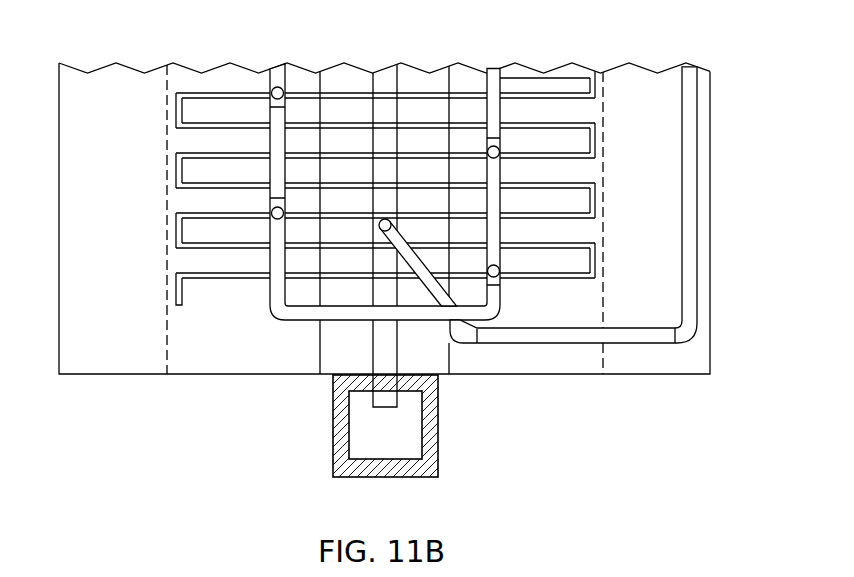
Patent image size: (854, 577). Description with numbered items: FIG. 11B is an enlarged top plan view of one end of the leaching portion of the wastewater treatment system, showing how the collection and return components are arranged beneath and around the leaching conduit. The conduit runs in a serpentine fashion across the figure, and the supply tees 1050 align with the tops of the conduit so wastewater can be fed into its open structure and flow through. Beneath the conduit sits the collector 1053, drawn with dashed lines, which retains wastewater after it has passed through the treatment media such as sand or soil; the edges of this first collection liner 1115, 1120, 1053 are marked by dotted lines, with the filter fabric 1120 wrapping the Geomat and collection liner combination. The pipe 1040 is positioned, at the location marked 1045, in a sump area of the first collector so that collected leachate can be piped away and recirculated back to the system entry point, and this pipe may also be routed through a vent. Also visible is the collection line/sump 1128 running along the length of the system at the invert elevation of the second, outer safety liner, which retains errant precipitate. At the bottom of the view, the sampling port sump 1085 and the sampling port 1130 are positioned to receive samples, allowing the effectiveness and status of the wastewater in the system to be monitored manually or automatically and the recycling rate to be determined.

The pipe 1040 is at (690, 190).
The pipe position in sump area 1045 is at (380, 230).
The supply tees 1050 is at (277, 87).
The collector 1053 is at (384, 249).
The sampling port sump 1085 is at (438, 456).
The edge of first collection liner 1115 is at (180, 264).
The filter fabric 1120 is at (367, 253).
The collection line/sump 1128 is at (323, 364).
The sampling port 1130 is at (383, 409).